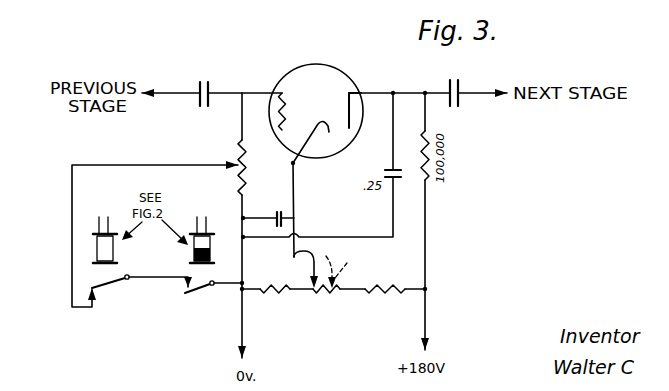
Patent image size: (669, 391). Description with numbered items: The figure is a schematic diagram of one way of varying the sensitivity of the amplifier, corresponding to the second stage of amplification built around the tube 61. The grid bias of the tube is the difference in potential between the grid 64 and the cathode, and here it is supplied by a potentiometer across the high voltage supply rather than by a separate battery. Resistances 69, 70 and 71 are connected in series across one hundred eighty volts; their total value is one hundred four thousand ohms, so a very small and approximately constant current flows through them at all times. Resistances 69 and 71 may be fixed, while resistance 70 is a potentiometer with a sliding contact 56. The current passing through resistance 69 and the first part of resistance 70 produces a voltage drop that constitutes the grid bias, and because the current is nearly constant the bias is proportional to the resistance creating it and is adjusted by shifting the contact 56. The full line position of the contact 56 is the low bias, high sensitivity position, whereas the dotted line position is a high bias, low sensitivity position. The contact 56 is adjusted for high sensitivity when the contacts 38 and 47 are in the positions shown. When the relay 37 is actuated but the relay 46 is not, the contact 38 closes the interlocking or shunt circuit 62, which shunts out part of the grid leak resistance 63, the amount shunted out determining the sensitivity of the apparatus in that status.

The tube 61 is at (322, 70).
The grid 64 is at (287, 101).
The grid leak resistance 63 is at (241, 146).
The interlocking or shunt circuit 62 is at (128, 165).
The relay 46 is at (112, 255).
The relay 37 is at (217, 238).
The contact 47 is at (109, 291).
The contact 38 is at (195, 295).
The resistance 69 is at (272, 282).
The sliding contact 56 is at (307, 268).
The potentiometer 70 is at (338, 285).
The resistance 71 is at (392, 282).